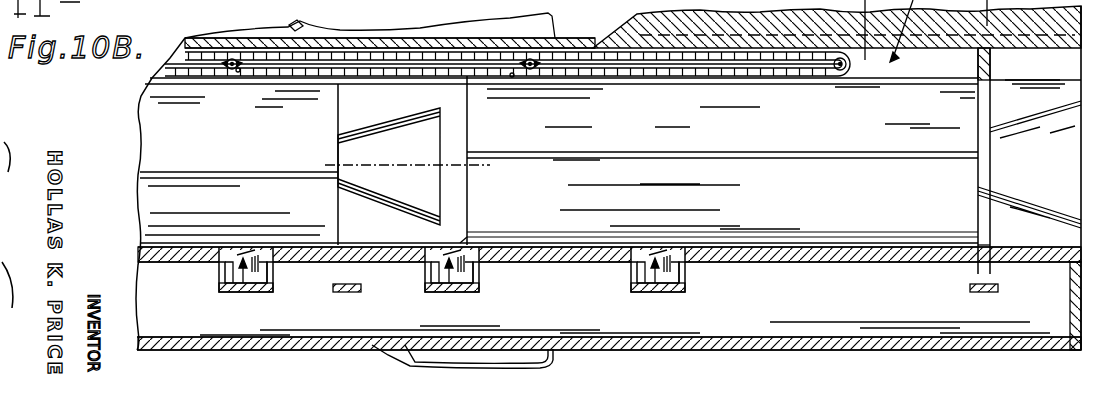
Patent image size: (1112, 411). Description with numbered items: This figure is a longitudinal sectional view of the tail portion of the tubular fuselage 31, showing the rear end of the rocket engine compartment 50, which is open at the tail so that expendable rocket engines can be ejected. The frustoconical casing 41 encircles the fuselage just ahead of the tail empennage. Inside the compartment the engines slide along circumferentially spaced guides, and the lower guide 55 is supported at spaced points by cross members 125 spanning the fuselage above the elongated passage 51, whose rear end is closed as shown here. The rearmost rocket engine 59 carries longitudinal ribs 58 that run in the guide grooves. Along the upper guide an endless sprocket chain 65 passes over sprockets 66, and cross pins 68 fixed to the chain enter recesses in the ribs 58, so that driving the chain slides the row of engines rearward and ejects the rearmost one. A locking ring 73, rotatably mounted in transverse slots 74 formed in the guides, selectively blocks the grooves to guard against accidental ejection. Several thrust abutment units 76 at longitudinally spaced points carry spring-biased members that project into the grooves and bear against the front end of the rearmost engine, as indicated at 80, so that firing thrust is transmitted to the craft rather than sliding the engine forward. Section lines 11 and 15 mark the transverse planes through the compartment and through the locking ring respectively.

The fuselage 31 is at (573, 37).
The frustoconical casing 41 is at (295, 27).
The rocket engine compartment 50 is at (395, 95).
The elongated passage 51 is at (603, 323).
The guide 55 is at (818, 258).
The longitudinal rib 58 is at (507, 89).
The rocket engine 59 is at (501, 99).
The endless sprocket chain 65 is at (616, 76).
The sprocket 66 is at (232, 58).
The cross pin 68 is at (238, 71).
The locking ring 73 is at (982, 232).
The transverse slot 74 is at (988, 62).
The thrust abutment unit 76 is at (243, 272).
The thrust abutment engagement 80 is at (468, 243).
The cross member 125 is at (339, 292).
The section line 11- 11 is at (866, 307).
The section line 15- 15 is at (991, 307).